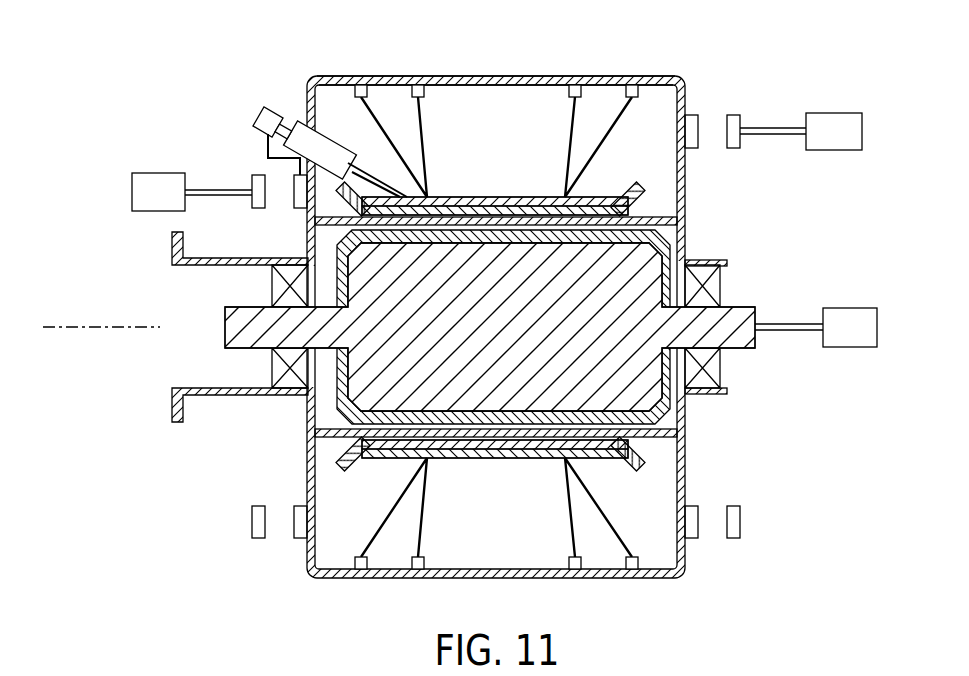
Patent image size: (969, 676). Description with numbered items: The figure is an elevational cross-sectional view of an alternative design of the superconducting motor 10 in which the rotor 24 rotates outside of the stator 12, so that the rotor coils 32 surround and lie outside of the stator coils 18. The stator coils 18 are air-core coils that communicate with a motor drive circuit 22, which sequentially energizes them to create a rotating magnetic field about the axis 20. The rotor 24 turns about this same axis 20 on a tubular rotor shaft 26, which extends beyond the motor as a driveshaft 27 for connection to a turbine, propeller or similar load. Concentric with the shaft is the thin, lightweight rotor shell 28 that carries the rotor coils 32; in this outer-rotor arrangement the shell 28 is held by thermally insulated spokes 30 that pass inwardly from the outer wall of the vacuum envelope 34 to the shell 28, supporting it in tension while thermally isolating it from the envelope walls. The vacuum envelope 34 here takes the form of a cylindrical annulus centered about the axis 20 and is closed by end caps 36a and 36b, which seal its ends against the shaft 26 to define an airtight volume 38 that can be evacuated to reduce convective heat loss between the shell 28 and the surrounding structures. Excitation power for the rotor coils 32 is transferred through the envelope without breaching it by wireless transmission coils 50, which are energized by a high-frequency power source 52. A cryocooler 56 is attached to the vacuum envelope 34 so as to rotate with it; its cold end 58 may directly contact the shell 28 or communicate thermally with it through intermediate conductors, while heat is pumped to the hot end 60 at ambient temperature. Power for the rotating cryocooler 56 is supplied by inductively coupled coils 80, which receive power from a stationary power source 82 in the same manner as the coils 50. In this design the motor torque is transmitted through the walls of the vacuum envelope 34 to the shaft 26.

The superconducting motor 10 is at (707, 31).
The stator 12 is at (490, 327).
The stator coils 18 is at (413, 248).
The axis 20 is at (103, 325).
The motor drive circuit 22 is at (863, 340).
The rotor 24 is at (690, 82).
The rotor shaft 26 is at (722, 259).
The driveshaft 27 is at (173, 250).
The rotor shell 28 is at (520, 196).
The spokes 30 is at (520, 298).
The rotor coils 32 is at (618, 197).
The vacuum envelope 34 is at (516, 76).
The end cap 36a is at (311, 106).
The end cap 36b is at (690, 462).
The airtight volume 38 is at (475, 517).
The wireless transmission coils 50 is at (731, 149).
The high-frequency power source 52 is at (847, 144).
The cryocooler 56 is at (288, 100).
The cold end 58 is at (352, 168).
The hot end 60 is at (262, 124).
The inductively coupled coils 80 is at (300, 210).
The stationary power source 82 is at (171, 205).